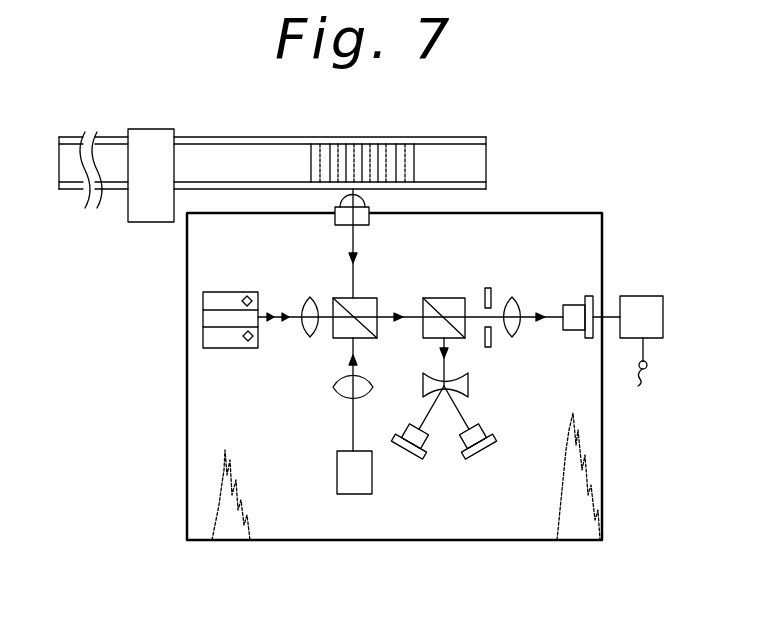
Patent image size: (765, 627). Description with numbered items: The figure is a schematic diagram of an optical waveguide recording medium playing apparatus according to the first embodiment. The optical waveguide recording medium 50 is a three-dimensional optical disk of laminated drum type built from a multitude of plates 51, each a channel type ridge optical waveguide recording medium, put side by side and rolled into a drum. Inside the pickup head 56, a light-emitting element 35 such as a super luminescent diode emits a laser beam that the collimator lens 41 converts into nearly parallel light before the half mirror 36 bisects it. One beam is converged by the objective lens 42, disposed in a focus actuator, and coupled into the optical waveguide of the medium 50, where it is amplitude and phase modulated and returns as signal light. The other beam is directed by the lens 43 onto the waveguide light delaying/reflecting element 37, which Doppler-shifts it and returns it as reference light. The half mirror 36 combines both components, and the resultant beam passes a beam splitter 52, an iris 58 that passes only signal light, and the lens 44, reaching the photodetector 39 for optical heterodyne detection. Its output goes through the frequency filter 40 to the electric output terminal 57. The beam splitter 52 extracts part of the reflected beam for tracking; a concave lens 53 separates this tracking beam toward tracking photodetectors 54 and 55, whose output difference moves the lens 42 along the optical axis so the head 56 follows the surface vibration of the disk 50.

The light-emitting element 35 is at (337, 472).
The half mirror 36 is at (368, 297).
The waveguide light delaying/reflecting element 37 is at (230, 350).
The photodetector 39 is at (568, 332).
The frequency filter 40 is at (642, 295).
The collimator lens 41 is at (336, 392).
The objective lens 42 is at (333, 224).
The lens 43 is at (306, 338).
The lens 44 is at (518, 296).
The optical waveguide recording medium 50 is at (487, 163).
The plate 51 is at (362, 137).
The beam splitter 52 is at (443, 297).
The concave lens 53 is at (468, 385).
The tracking photodetector 54 is at (430, 445).
The tracking photodetector 55 is at (490, 432).
The pickup head 56 is at (373, 541).
The electric output terminal 57 is at (631, 375).
The iris 58 is at (491, 290).